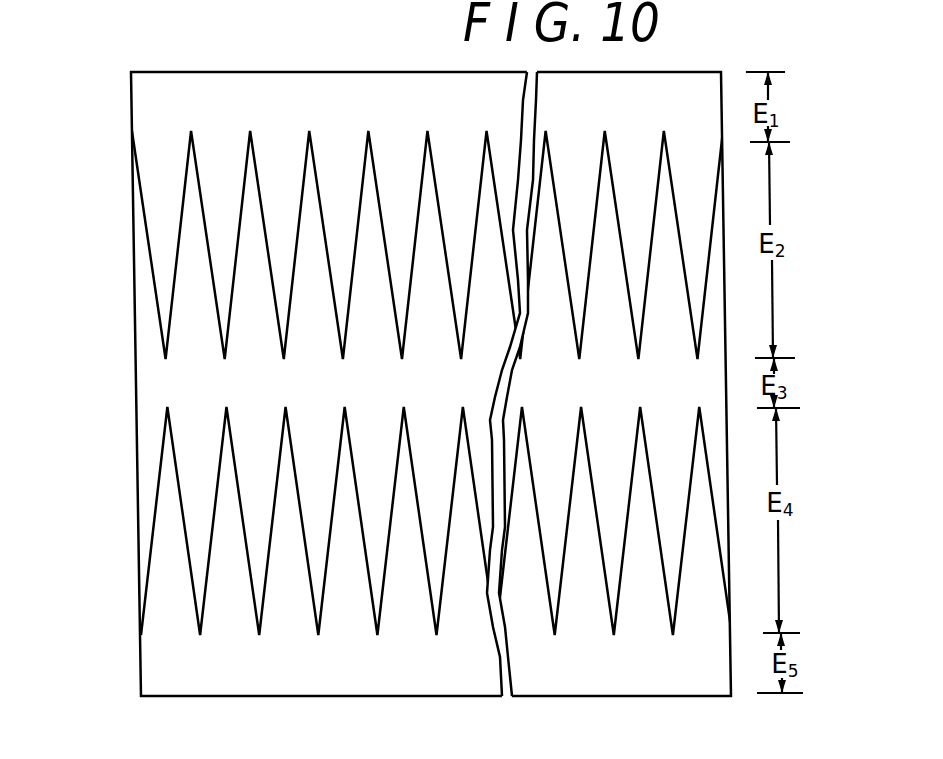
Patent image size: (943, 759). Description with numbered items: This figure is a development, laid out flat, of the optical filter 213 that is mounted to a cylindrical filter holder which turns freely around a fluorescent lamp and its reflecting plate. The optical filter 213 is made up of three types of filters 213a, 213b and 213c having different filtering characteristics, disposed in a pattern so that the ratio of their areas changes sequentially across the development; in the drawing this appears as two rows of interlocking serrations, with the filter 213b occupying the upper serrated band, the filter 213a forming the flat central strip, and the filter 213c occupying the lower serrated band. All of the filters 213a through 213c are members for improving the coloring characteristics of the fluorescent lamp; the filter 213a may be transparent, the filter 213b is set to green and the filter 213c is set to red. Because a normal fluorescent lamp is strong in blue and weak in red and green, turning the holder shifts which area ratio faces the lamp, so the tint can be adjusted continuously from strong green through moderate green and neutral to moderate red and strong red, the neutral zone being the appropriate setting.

The optical filter 213 is at (388, 356).
The filter 213a is at (150, 380).
The filter 213b is at (146, 117).
The filter 213c is at (148, 642).